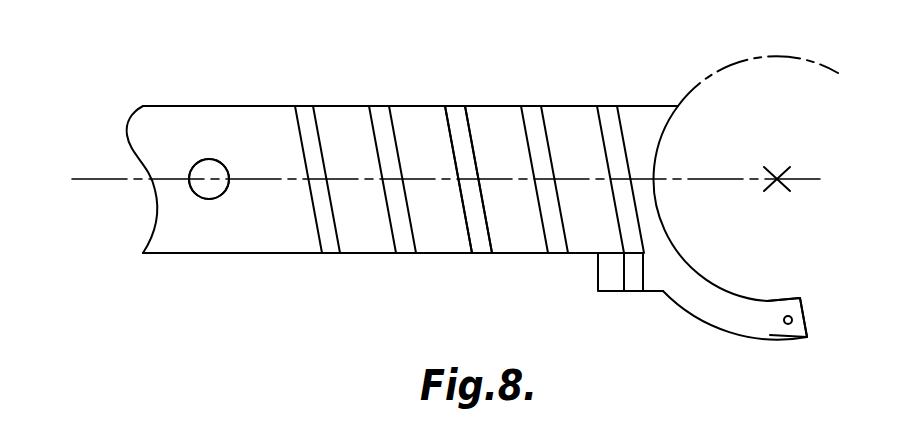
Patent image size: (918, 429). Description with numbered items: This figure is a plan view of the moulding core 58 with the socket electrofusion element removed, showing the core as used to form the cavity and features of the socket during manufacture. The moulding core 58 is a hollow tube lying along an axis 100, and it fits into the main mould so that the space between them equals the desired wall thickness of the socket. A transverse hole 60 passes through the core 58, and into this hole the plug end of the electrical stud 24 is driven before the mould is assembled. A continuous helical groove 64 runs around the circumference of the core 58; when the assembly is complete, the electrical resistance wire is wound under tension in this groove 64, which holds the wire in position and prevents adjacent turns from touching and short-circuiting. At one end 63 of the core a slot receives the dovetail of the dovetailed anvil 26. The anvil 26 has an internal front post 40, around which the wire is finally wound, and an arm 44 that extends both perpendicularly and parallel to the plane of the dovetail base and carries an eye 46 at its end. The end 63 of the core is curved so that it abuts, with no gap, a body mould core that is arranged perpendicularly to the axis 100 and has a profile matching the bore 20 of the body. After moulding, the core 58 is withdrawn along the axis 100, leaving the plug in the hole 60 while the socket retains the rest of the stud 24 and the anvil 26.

The axis 100 is at (105, 178).
The electrical stud 24 is at (217, 164).
The transverse hole 60 is at (209, 199).
The continuous helical groove 64 is at (458, 118).
The moulding core 58 is at (458, 218).
The end of the core 63 is at (678, 109).
The bore 20 is at (755, 59).
The front post 40 is at (617, 272).
The dovetailed anvil 26 is at (694, 316).
The arm 44 is at (770, 310).
The eye 46 is at (790, 326).